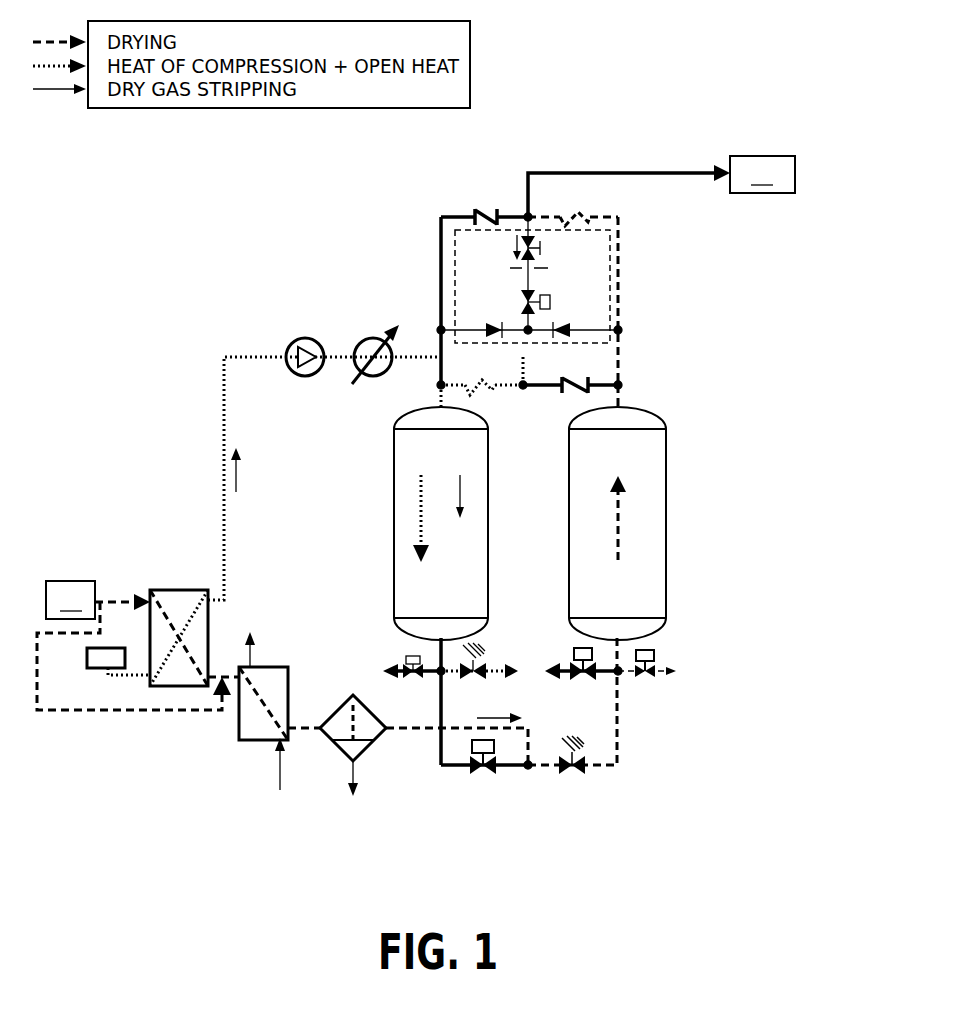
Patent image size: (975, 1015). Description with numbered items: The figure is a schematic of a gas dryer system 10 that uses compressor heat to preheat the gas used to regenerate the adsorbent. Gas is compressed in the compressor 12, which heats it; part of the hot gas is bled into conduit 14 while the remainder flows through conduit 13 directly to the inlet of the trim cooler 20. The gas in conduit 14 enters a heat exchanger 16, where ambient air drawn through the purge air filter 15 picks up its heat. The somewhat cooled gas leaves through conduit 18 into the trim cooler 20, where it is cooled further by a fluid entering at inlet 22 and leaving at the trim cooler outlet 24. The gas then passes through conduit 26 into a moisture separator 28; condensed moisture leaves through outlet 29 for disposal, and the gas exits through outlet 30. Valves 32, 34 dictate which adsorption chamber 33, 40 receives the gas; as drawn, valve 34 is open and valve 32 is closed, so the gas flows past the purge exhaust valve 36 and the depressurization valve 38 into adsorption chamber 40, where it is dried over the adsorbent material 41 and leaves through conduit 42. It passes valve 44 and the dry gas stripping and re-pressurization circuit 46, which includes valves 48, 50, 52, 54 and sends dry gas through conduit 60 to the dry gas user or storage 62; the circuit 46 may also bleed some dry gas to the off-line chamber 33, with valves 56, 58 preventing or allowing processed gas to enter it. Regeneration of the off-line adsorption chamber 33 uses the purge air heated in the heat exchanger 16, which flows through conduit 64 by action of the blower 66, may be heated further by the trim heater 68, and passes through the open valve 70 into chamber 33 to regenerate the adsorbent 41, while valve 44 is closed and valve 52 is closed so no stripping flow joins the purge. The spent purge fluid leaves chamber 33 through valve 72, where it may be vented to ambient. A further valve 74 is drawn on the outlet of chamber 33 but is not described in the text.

The gas dryer system 10 is at (728, 58).
The compressor 12 is at (70, 600).
The conduit 13 is at (92, 712).
The conduit 14 is at (112, 598).
The purge air filter 15 is at (85, 660).
The heat exchanger 16 is at (178, 590).
The conduit 18 is at (222, 672).
The trim cooler 20 is at (238, 722).
The inlet 22 is at (283, 782).
The trim cooler outlet 24 is at (258, 648).
The conduit 26 is at (295, 725).
The moisture separator 28 is at (370, 748).
The outlet 29 is at (360, 785).
The outlet 30 is at (378, 725).
The valve 32 is at (490, 775).
The adsorption chamber 33 is at (403, 494).
The valve 34 is at (580, 775).
The purge exhaust valve 36 is at (570, 657).
The depressurization valve 38 is at (657, 657).
The adsorption chamber 40 is at (650, 490).
The adsorbent material 41 is at (405, 585).
The conduit 42 is at (622, 402).
The valve 44 is at (585, 380).
The dry gas stripping and re-pressurization circuit 46 is at (612, 260).
The valve 48 is at (580, 325).
The valve 50 is at (485, 325).
The valve 52 is at (520, 298).
The valve 54 is at (535, 240).
The valve 56 is at (565, 213).
The valve 58 is at (478, 212).
The conduit 60 is at (670, 173).
The dry gas user or storage 62 is at (762, 174).
The conduit 64 is at (228, 583).
The blower 66 is at (290, 340).
The trim heater 68 is at (358, 340).
The valve 70 is at (495, 395).
The valve 72 is at (485, 657).
The valve 74 is at (413, 658).